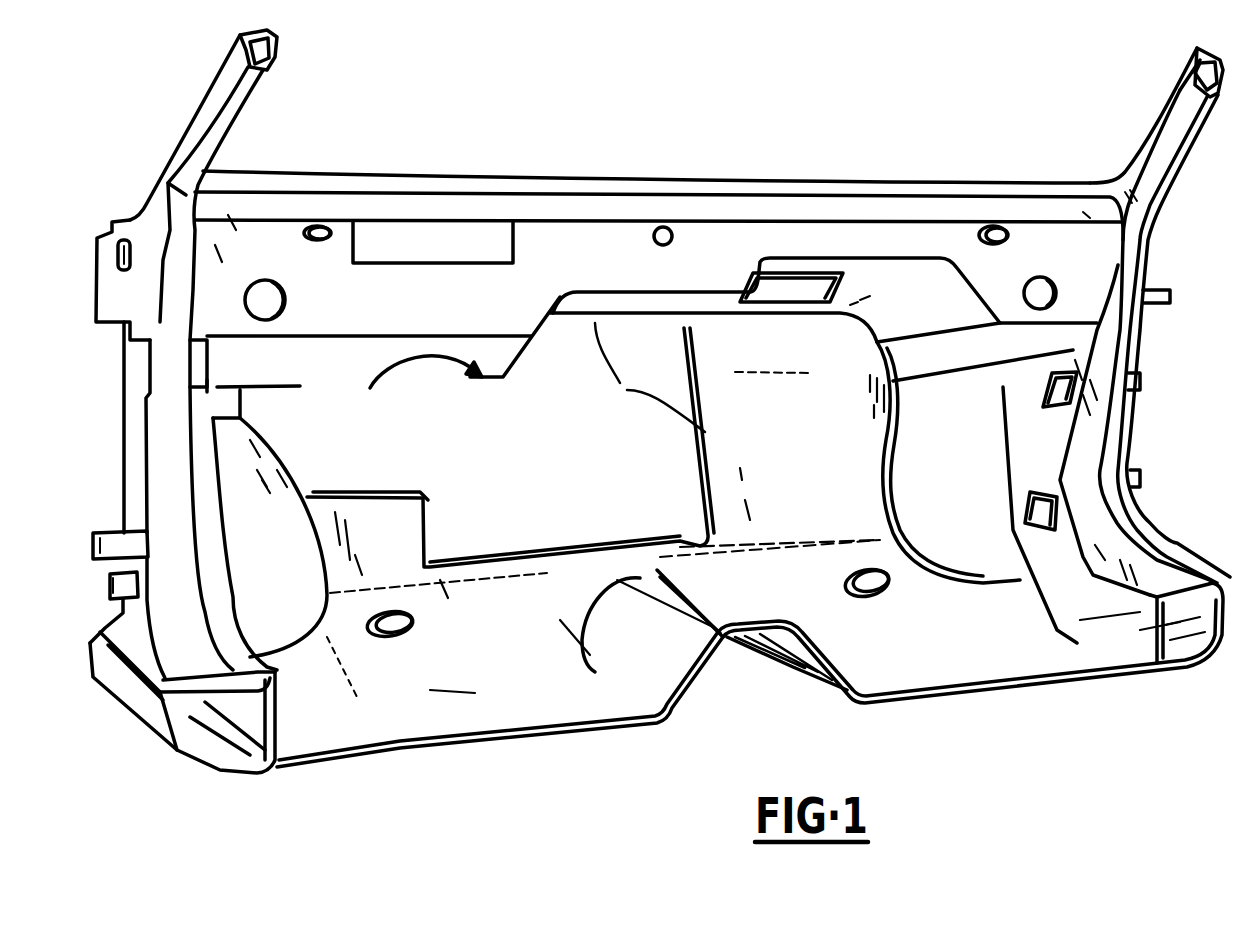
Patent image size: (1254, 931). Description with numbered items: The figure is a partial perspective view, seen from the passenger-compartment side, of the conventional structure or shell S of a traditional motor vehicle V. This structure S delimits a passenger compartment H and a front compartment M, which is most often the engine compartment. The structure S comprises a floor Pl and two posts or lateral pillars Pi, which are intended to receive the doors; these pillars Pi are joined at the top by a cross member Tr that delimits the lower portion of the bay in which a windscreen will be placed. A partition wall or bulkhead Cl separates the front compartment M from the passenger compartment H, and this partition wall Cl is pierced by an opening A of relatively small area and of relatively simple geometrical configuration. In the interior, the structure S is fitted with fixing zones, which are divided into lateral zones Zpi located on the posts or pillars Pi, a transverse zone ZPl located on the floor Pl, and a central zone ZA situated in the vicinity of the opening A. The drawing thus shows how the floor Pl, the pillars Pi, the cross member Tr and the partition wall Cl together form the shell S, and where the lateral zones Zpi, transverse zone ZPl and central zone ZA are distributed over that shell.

The vehicle V is at (125, 181).
The front compartment M is at (633, 136).
The cross member Tr is at (757, 195).
The lateral zone Zpi is at (1118, 270).
The lateral pillar Pi is at (163, 365).
The central zone ZA is at (592, 567).
The opening A is at (652, 412).
The partition wall Cl is at (878, 483).
The transverse zone ZPl is at (645, 585).
The floor Pl is at (592, 728).
The structure S is at (1185, 617).
The passenger compartment H is at (1209, 394).